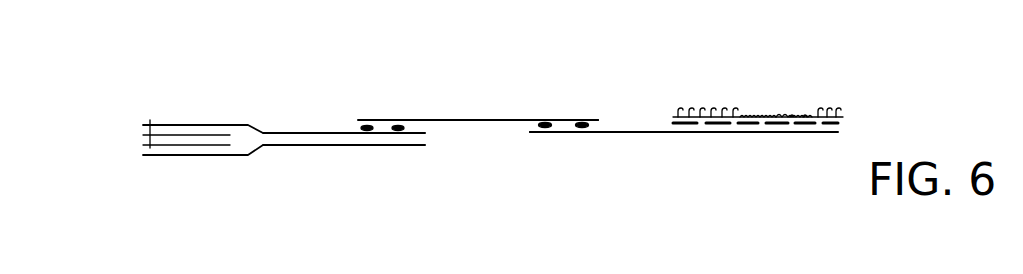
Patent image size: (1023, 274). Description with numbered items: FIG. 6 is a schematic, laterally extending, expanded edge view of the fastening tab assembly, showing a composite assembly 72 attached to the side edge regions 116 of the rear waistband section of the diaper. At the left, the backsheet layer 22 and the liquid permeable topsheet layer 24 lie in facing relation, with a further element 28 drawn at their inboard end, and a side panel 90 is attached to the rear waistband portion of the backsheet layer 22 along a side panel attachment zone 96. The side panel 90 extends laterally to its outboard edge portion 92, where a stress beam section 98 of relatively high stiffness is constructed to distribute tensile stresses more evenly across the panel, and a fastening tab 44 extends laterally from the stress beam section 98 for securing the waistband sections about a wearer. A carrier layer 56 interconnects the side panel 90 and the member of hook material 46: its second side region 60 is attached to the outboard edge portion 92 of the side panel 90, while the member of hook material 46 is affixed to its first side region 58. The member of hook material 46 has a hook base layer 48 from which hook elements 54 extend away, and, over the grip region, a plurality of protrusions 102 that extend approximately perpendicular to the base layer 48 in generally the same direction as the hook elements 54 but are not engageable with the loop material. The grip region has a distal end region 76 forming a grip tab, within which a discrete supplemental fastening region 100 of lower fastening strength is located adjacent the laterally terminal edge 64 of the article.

The backsheet layer 22 is at (217, 156).
The topsheet layer 24 is at (200, 124).
The fiber end 28 is at (160, 135).
The side edge regions 116 is at (393, 147).
The side panel 90 is at (468, 118).
The side panel attachment zone 96 is at (382, 118).
The outboard edge portion 92 is at (595, 117).
The composite assembly 72 is at (573, 66).
The fastening tab 44 is at (620, 135).
The first side region 58 is at (537, 135).
The stress beam section 98 is at (560, 138).
The carrier layer 56 is at (653, 135).
The terminal edge 64 is at (843, 115).
The second side region 60 is at (788, 133).
The hook elements 54 is at (700, 108).
The member of hook material 46 is at (753, 108).
The hook base layer 48 is at (782, 108).
The protrusions 102 is at (793, 113).
The distal end region 76 is at (805, 113).
The supplemental fastening region 100 is at (828, 112).